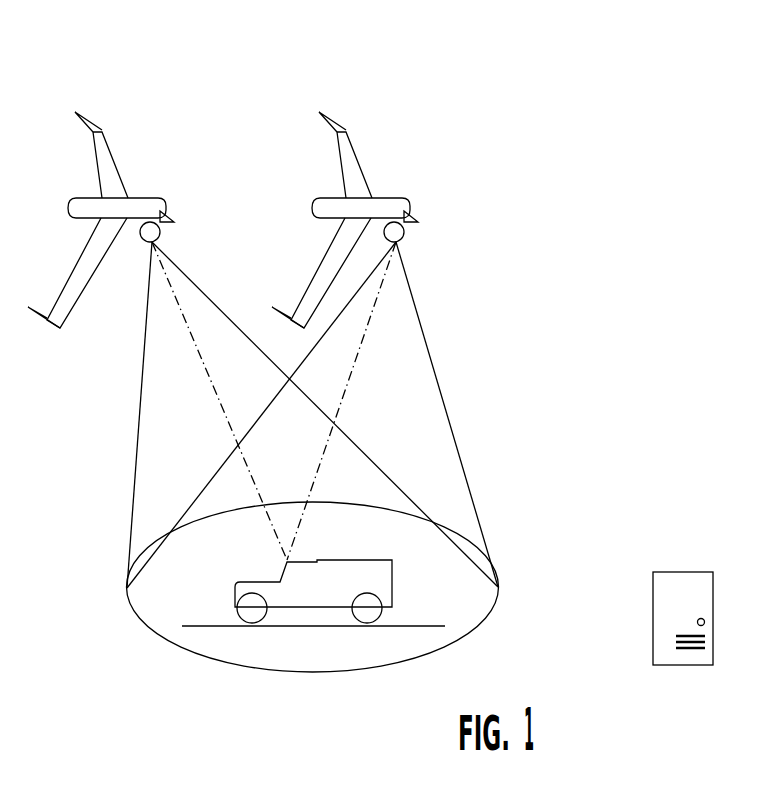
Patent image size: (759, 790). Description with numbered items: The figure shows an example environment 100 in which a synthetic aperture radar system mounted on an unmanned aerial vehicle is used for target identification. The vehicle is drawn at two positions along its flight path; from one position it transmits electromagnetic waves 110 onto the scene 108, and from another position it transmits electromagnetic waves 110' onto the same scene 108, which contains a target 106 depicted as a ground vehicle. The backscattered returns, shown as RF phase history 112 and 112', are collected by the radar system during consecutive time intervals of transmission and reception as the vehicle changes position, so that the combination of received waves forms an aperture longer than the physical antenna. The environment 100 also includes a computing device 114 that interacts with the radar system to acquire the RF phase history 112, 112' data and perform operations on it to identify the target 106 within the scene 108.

The example environment 100 is at (148, 58).
The target 106 is at (330, 561).
The scene 108 is at (473, 632).
The electromagnetic waves 110 is at (292, 415).
The electromagnetic waves 110' is at (312, 415).
The RF phase history 112 is at (219, 401).
The RF phase history 112' is at (329, 401).
The computing device 114 is at (693, 572).